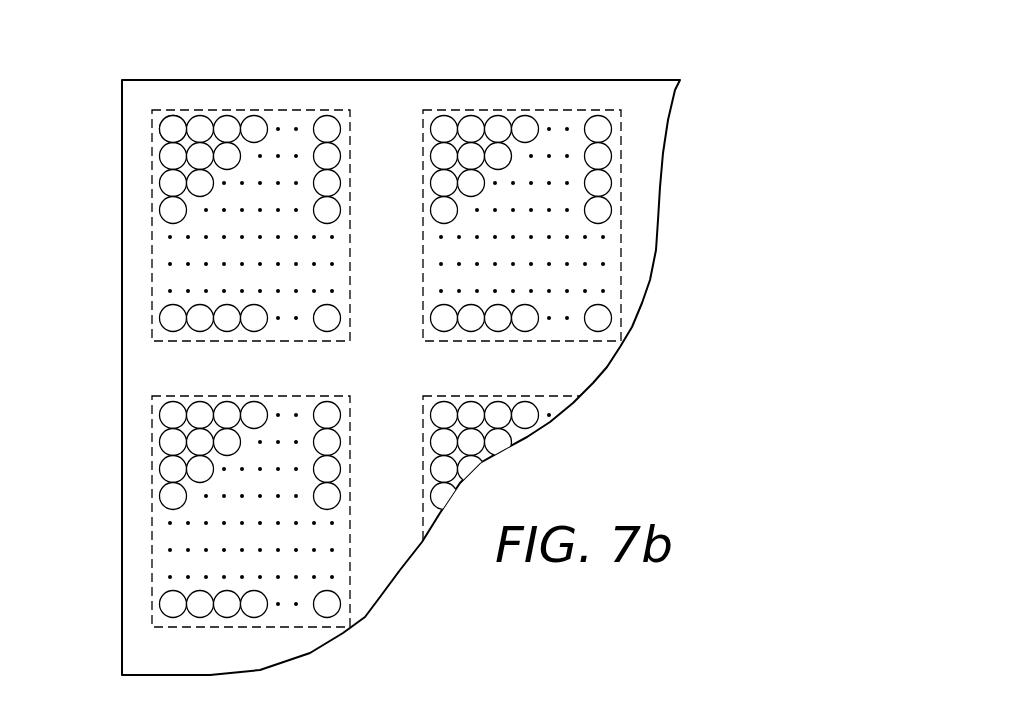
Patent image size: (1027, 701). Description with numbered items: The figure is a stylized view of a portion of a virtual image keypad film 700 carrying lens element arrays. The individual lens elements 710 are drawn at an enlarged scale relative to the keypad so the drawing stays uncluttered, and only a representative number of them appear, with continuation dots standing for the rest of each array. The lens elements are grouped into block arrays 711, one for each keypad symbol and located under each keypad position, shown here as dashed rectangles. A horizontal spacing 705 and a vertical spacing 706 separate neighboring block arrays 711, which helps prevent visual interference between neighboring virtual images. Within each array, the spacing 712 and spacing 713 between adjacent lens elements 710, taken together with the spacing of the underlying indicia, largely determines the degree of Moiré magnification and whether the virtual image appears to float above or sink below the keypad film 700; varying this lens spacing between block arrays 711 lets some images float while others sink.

The virtual image keypad film 700 is at (205, 667).
The spacing between block arrays 705 is at (422, 163).
The spacing between block arrays 706 is at (286, 342).
The lens element 710 is at (160, 130).
The block array 711 is at (157, 291).
The spacing between lens elements 712 is at (412, 57).
The spacing between lens elements 713 is at (698, 97).